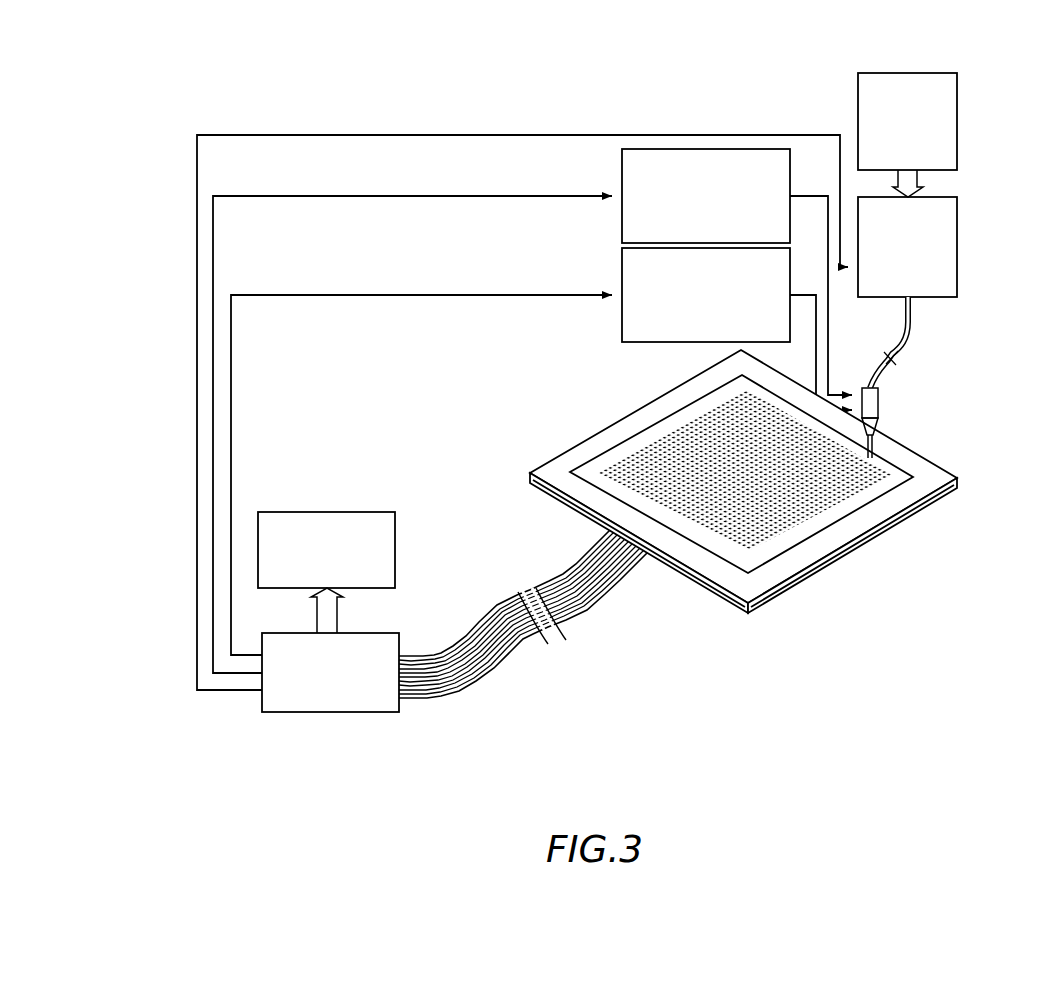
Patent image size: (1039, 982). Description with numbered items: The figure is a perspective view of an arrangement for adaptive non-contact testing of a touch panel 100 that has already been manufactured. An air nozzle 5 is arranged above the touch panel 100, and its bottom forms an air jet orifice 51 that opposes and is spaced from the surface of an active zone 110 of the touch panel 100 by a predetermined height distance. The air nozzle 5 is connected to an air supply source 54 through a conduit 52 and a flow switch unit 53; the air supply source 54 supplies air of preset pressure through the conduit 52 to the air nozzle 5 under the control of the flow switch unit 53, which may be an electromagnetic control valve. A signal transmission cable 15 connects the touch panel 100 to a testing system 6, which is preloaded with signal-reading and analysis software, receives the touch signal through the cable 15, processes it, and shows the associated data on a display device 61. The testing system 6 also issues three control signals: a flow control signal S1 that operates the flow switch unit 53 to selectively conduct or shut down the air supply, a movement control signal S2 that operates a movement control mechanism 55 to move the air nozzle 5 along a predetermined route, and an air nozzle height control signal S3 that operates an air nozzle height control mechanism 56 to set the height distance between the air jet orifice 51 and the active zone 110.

The flow control signal S1 is at (492, 135).
The movement control signal S2 is at (535, 196).
The air nozzle height control signal S3 is at (497, 295).
The movement control mechanism 55 is at (632, 149).
The air nozzle height control mechanism 56 is at (622, 318).
The air supply source 54 is at (957, 160).
The flow switch unit 53 is at (957, 290).
The conduit 52 is at (911, 327).
The air nozzle 5 is at (878, 405).
The air jet orifice 51 is at (872, 447).
The touch panel 100 is at (952, 460).
The active zone 110 is at (848, 505).
The signal transmission cable 15 is at (610, 598).
The testing system 6 is at (381, 712).
The display device 61 is at (368, 512).